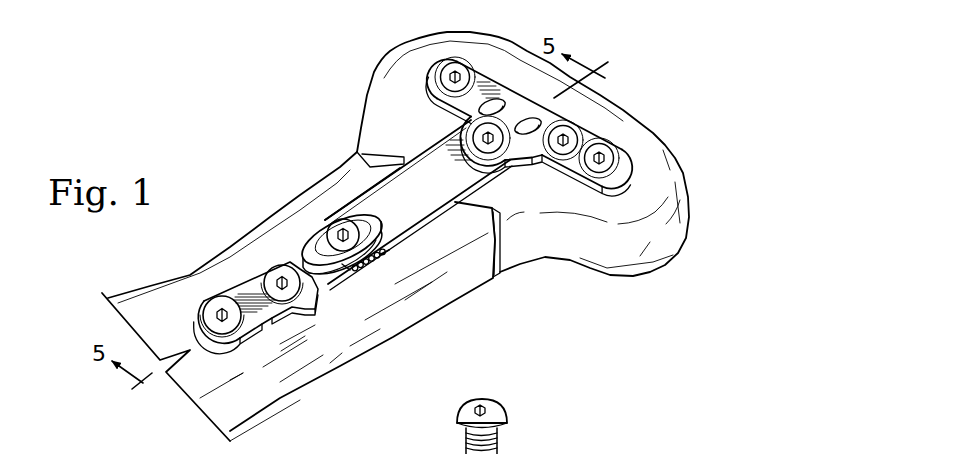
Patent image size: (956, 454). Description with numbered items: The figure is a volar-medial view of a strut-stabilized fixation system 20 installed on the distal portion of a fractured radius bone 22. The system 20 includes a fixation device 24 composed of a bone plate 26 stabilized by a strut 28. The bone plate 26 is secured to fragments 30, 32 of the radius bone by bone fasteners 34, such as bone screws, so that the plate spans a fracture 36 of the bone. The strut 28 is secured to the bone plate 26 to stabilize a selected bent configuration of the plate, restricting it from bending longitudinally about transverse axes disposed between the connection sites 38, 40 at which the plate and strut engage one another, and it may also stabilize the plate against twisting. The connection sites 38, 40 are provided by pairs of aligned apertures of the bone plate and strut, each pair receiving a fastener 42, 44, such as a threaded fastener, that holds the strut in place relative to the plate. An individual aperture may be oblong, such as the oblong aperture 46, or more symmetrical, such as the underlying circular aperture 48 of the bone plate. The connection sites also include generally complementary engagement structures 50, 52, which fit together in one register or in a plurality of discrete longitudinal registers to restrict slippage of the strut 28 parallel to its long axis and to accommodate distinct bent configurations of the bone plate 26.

The strut-stabilized fixation system 20 is at (317, 208).
The radius bone 22 is at (394, 340).
The fixation device 24 is at (384, 176).
The bone plate 26 is at (324, 300).
The strut 28 is at (434, 195).
The bone fragment 30 is at (466, 297).
The bone fragment 32 is at (551, 262).
The bone fasteners 34 is at (455, 62).
The fracture 36 is at (506, 243).
The connection site 38 is at (305, 232).
The connection site 40 is at (518, 175).
The fastener 42 is at (344, 230).
The fastener 44 is at (500, 125).
The oblong aperture 46 is at (318, 253).
The circular aperture 48 is at (346, 268).
The engagement structure 50 is at (373, 271).
The engagement structure 52 is at (389, 258).